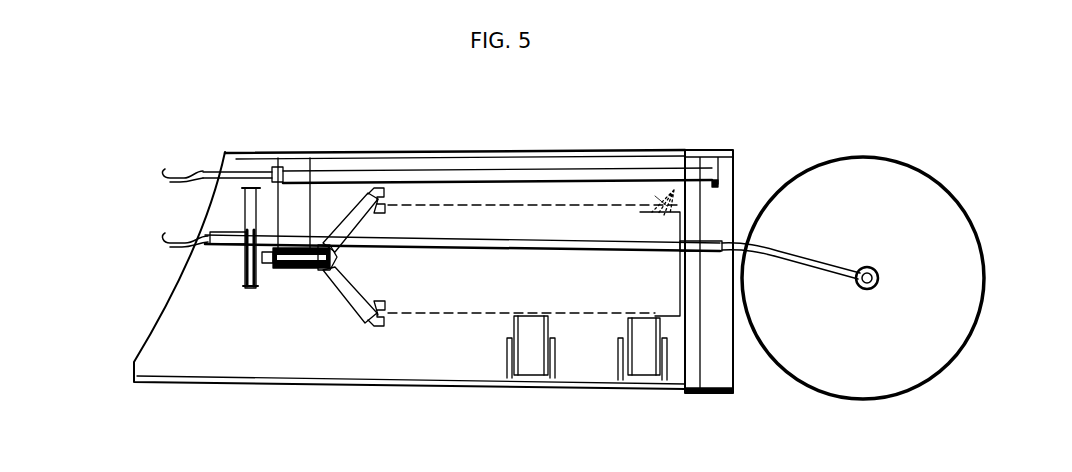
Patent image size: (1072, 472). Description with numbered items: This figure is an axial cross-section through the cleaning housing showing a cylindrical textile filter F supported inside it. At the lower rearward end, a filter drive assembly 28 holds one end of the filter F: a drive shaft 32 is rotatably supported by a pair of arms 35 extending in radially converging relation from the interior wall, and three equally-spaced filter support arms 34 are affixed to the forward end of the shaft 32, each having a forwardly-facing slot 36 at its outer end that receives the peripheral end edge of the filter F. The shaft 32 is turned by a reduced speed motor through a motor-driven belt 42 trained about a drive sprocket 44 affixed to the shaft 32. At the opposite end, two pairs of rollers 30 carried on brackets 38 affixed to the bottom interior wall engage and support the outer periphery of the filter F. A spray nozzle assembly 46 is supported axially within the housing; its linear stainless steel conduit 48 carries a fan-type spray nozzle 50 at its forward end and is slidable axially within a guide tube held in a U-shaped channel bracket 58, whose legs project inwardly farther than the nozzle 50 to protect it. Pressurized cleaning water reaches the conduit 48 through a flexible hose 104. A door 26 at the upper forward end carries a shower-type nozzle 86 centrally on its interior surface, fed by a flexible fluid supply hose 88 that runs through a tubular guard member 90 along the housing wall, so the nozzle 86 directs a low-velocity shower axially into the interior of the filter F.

The door 26 is at (981, 315).
The filter drive assembly 28 is at (259, 304).
The rollers 30 is at (637, 360).
The drive shaft 32 is at (245, 256).
The filter support arms 34 is at (348, 220).
The arms 35 is at (292, 203).
The forwardly-facing slot 36 is at (378, 192).
The brackets 38 is at (507, 358).
The motor-driven belt 42 is at (246, 288).
The drive sprocket 44 is at (245, 277).
The spray nozzle assembly 46 is at (628, 169).
The conduit 48 is at (222, 178).
The fan-type spray nozzle 50 is at (675, 191).
The U-shaped channel bracket 58 is at (476, 178).
The shower-type nozzle 86 is at (862, 266).
The flexible fluid supply hose 88 is at (175, 238).
The tubular guard member 90 is at (534, 246).
The flexible hose 104 is at (188, 173).
The filter F is at (567, 213).